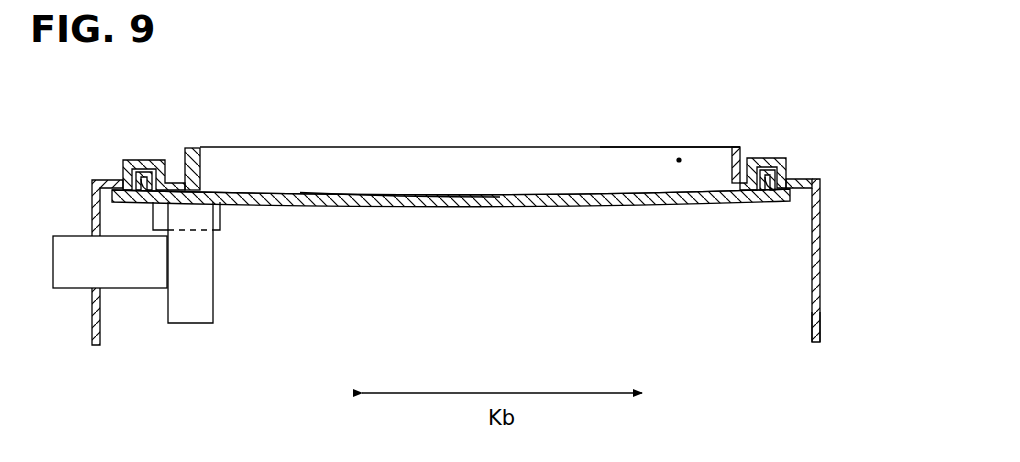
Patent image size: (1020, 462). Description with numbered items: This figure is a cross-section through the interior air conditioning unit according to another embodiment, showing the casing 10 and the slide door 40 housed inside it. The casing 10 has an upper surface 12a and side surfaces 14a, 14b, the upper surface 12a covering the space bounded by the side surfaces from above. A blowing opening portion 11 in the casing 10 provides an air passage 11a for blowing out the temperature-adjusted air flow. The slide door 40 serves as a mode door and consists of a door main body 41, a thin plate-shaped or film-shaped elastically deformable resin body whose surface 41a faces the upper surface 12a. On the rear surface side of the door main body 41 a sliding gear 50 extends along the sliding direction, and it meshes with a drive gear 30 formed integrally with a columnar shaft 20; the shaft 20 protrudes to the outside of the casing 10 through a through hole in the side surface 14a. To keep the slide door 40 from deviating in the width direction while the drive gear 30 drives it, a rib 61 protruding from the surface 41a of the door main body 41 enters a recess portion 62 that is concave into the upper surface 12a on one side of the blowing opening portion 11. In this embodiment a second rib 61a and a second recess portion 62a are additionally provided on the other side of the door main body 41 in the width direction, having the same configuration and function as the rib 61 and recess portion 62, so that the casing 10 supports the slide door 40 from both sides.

The casing 10 is at (824, 278).
The blowing opening portion 11 is at (735, 146).
The air passage 11a is at (680, 158).
The upper surface 12a is at (800, 178).
The side surface 14a is at (92, 325).
The side surface 14b is at (822, 318).
The shaft 20 is at (62, 292).
The drive gear 30 is at (188, 327).
The slide door 40 is at (518, 206).
The door main body 41 is at (422, 195).
The surface of door main body 41a is at (365, 193).
The sliding gear 50 is at (222, 207).
The rib 61 is at (183, 186).
The rib 61a is at (762, 178).
The recess portion 62 is at (137, 176).
The recess portion 62a is at (772, 160).